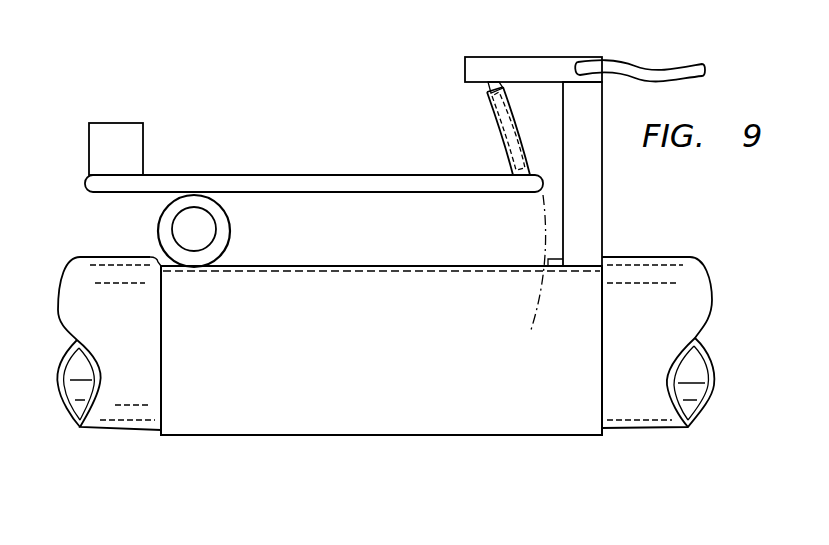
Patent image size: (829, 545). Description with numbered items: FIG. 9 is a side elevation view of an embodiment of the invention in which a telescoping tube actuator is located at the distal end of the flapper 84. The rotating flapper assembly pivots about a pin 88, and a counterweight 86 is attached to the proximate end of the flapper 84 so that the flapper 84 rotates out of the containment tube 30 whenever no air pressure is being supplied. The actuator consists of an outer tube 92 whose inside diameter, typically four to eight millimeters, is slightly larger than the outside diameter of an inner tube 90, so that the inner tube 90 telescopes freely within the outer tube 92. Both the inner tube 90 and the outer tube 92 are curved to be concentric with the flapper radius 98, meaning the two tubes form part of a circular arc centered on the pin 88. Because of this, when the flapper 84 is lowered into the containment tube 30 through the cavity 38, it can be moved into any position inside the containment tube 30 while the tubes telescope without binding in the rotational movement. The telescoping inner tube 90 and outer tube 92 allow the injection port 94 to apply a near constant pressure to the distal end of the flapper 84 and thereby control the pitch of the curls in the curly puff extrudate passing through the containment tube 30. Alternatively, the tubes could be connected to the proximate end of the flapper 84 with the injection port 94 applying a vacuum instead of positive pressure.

The containment tube 30 is at (643, 257).
The cavity 38 is at (372, 265).
The flapper 84 is at (279, 175).
The counterweight 86 is at (88, 142).
The pin 88 is at (183, 225).
The inner tube 90 is at (483, 85).
The outer tube 92 is at (500, 132).
The injection port 94 is at (555, 57).
The flapper radius 98 is at (535, 313).